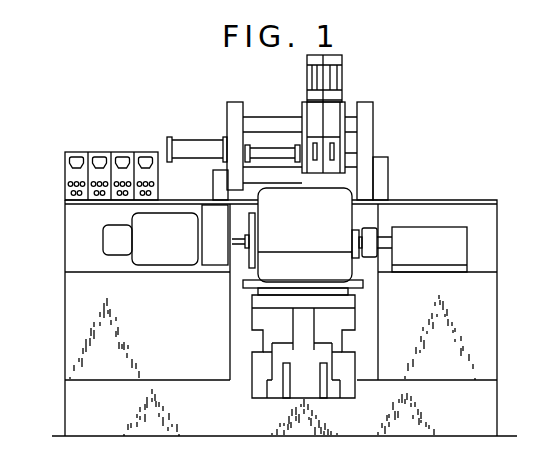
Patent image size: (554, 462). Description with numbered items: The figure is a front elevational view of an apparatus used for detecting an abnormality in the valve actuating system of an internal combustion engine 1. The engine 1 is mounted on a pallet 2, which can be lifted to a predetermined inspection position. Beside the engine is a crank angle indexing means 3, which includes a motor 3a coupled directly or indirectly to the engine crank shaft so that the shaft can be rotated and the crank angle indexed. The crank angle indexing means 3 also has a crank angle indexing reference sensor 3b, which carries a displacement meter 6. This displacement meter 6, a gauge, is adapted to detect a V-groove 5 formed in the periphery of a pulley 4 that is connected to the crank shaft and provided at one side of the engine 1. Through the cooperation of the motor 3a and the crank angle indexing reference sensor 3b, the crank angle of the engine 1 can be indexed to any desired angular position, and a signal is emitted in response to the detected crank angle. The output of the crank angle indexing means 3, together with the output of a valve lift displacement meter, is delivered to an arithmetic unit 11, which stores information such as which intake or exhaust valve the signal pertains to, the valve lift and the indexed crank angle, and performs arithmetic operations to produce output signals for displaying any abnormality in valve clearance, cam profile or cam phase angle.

The internal combustion engine 1 is at (337, 213).
The pallet 2 is at (330, 297).
The crank angle indexing means 3 is at (65, 342).
The motor 3a is at (153, 256).
The crank angle indexing reference sensor 3b is at (470, 252).
The pulley 4 is at (352, 258).
The V-groove 5 is at (352, 229).
The displacement meter 6 is at (366, 222).
The arithmetic unit 11 is at (65, 168).